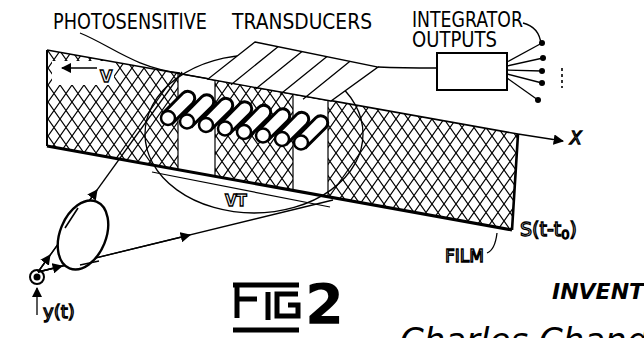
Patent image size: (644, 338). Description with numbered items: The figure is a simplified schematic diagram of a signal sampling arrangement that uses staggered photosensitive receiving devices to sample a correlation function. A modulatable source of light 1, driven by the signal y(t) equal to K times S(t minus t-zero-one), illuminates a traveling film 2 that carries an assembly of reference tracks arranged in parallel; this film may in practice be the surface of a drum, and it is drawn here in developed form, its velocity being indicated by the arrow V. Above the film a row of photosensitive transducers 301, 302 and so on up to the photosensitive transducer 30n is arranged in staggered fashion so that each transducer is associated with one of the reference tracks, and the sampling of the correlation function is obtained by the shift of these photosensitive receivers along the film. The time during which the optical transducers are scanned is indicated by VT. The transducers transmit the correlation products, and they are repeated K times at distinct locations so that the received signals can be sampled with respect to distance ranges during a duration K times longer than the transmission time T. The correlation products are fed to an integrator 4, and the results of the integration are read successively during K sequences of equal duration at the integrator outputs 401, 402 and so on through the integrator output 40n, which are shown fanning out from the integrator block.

The modulatable source of light 1 is at (30, 273).
The traveling film 2 is at (440, 215).
The integrator 4 is at (440, 77).
The photosensitive transducer 30n is at (155, 165).
The photosensitive transducer 301 is at (301, 150).
The photosensitive transducer 302 is at (281, 147).
The integrator output 401 is at (544, 42).
The integrator output 402 is at (545, 57).
The integrator output 40n is at (541, 101).